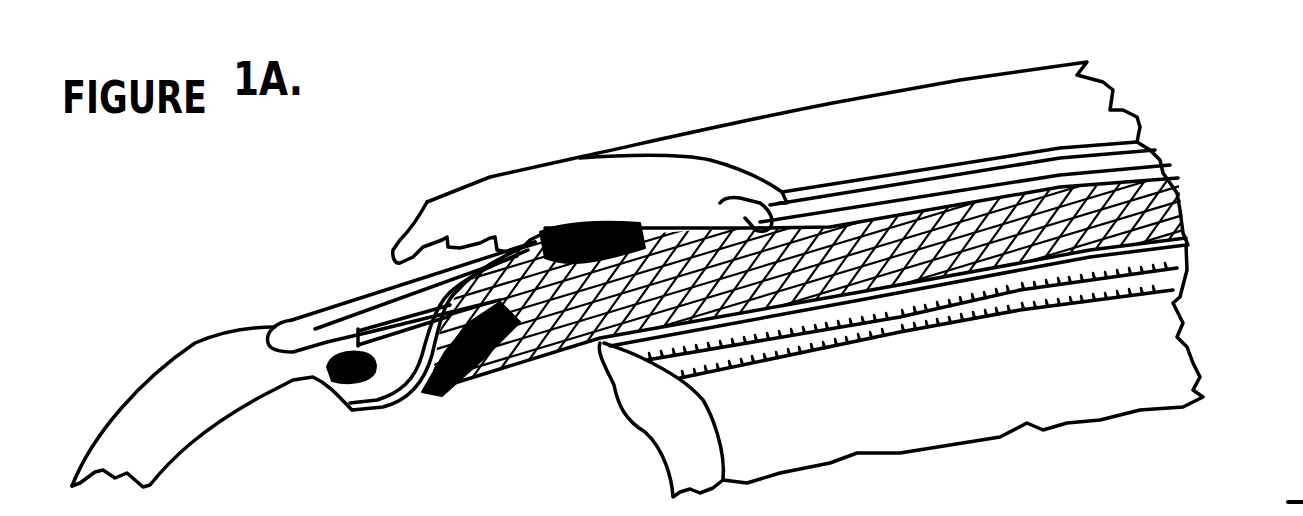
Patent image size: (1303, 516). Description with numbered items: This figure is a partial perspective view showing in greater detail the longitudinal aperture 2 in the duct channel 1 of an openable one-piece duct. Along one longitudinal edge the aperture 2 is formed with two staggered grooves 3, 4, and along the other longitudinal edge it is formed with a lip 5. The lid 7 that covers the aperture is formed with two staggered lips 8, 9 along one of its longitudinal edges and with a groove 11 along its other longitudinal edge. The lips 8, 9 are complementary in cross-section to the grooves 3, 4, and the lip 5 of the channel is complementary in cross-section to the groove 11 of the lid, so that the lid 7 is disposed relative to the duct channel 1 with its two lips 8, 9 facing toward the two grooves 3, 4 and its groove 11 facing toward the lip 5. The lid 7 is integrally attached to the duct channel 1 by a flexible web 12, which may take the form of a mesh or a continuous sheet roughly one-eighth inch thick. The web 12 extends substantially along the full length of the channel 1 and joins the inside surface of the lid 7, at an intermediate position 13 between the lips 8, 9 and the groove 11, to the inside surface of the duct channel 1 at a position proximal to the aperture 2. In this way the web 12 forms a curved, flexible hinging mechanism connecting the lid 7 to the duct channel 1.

The duct channel 1 is at (1183, 388).
The longitudinal aperture 2 is at (548, 378).
The groove 3 is at (313, 342).
The groove 4 is at (370, 370).
The lip 5 is at (612, 380).
The lid 7 is at (622, 182).
The lip 8 is at (393, 248).
The lip 9 is at (481, 237).
The groove 11 is at (758, 207).
The flexible web 12 is at (1180, 190).
The intermediate position 13 is at (531, 232).